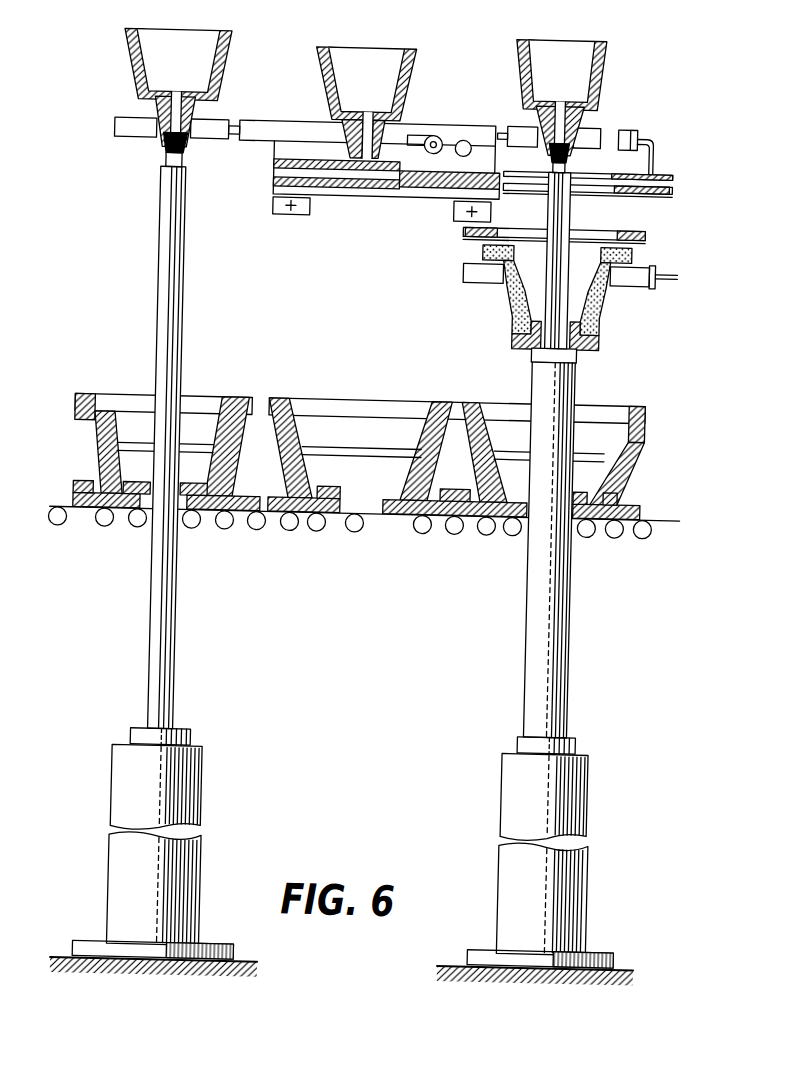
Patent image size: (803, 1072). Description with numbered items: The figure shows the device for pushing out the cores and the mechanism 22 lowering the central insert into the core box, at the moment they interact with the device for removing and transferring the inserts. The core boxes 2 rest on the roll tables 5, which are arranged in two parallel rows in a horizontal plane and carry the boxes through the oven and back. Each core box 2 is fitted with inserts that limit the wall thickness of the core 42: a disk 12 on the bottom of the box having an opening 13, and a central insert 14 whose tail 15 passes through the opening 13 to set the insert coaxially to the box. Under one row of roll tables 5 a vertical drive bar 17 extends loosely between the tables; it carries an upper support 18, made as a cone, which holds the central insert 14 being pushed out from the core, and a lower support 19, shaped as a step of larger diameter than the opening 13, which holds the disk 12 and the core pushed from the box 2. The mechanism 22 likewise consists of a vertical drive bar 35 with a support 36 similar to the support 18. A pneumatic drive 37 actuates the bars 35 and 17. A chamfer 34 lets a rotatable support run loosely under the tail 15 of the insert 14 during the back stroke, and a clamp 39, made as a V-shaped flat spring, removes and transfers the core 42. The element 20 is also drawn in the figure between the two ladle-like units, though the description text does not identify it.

The core box 2 is at (270, 407).
The roll tables 5 is at (103, 535).
The disk 12 is at (507, 337).
The opening 13 is at (536, 349).
The central insert 14 is at (114, 66).
The tail 15 is at (149, 136).
The vertical drive bar 17 is at (574, 631).
The upper support 18 is at (540, 150).
The lower support 19 is at (571, 350).
The intermediate pouring funnel 20 is at (360, 162).
The mechanism lowering the central insert 22 is at (153, 677).
The chamfer 34 is at (418, 133).
The vertical drive bar 35 is at (171, 647).
The support 36 is at (179, 152).
The pneumatic drive 37 is at (206, 803).
The clamp 39 is at (635, 280).
The core 42 is at (637, 237).